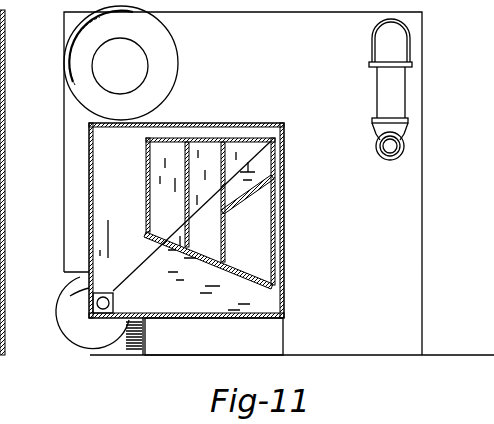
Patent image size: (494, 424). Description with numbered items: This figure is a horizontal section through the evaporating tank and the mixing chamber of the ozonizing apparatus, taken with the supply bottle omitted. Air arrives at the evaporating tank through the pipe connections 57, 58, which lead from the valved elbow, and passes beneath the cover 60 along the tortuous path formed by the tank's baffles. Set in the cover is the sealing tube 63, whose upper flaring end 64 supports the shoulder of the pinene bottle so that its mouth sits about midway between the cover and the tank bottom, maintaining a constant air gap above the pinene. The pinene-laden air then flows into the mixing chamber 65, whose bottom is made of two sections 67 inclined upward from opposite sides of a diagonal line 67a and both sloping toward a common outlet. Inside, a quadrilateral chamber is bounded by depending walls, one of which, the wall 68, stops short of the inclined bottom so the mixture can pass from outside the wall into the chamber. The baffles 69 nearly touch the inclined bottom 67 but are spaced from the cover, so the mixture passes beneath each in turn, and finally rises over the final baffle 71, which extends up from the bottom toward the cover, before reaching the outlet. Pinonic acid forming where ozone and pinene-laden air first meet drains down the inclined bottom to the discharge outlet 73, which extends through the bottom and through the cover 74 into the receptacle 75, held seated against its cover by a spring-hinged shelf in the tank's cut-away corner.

The pipe connection 57 is at (377, 147).
The pipe connection 58 is at (372, 40).
The cover 60 is at (279, 183).
The sealing tube 63 is at (147, 67).
The upper flaring end 64 is at (179, 54).
The mixing chamber 65 is at (231, 318).
The bottom sections 67 is at (185, 225).
The diagonal line 67a is at (175, 228).
The wall 68 is at (147, 168).
The baffles 69 is at (192, 160).
The final baffle 71 is at (222, 222).
The discharge outlet 73 is at (113, 302).
The cover 74 is at (71, 300).
The receptacle 75 is at (63, 339).